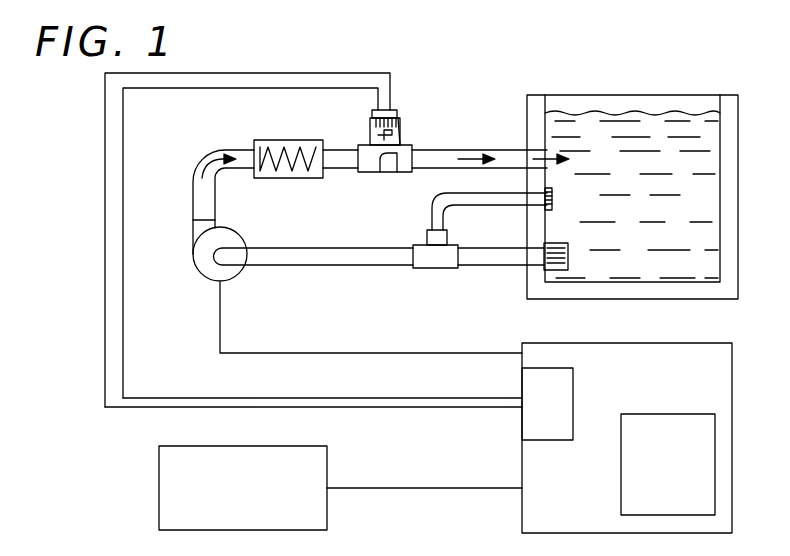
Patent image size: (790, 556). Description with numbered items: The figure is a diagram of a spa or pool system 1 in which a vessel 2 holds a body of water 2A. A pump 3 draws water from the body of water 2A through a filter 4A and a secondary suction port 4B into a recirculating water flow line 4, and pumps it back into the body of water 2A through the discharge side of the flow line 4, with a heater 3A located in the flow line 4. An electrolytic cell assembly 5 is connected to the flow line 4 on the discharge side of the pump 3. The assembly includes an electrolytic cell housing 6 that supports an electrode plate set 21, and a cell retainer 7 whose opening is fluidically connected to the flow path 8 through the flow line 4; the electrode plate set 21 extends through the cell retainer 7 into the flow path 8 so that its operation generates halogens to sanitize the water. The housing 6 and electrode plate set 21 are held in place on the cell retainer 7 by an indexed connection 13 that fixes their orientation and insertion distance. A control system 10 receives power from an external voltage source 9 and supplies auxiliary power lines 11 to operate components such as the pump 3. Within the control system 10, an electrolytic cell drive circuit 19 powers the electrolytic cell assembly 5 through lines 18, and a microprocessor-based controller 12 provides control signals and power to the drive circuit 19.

The spa or pool system 1 is at (270, 58).
The vessel 2 is at (738, 100).
The body of water 2A is at (628, 113).
The pump 3 is at (192, 270).
The heater 3A is at (278, 140).
The recirculating water flow line 4 is at (495, 150).
The filter 4A is at (630, 229).
The secondary suction port 4B is at (615, 181).
The electrolytic cell assembly 5 is at (398, 100).
The electrolytic cell housing 6 is at (401, 118).
The cell retainer 7 is at (406, 143).
The flow path 8 is at (204, 166).
The external voltage source 9 is at (159, 460).
The control system 10 is at (688, 343).
The auxiliary power lines 11 is at (292, 353).
The microprocessor-based controller 12 is at (668, 414).
The indexed connection 13 is at (352, 128).
The lines 18 is at (105, 122).
The electrolytic cell drive circuit 19 is at (573, 393).
The electrode plate set 21 is at (368, 172).